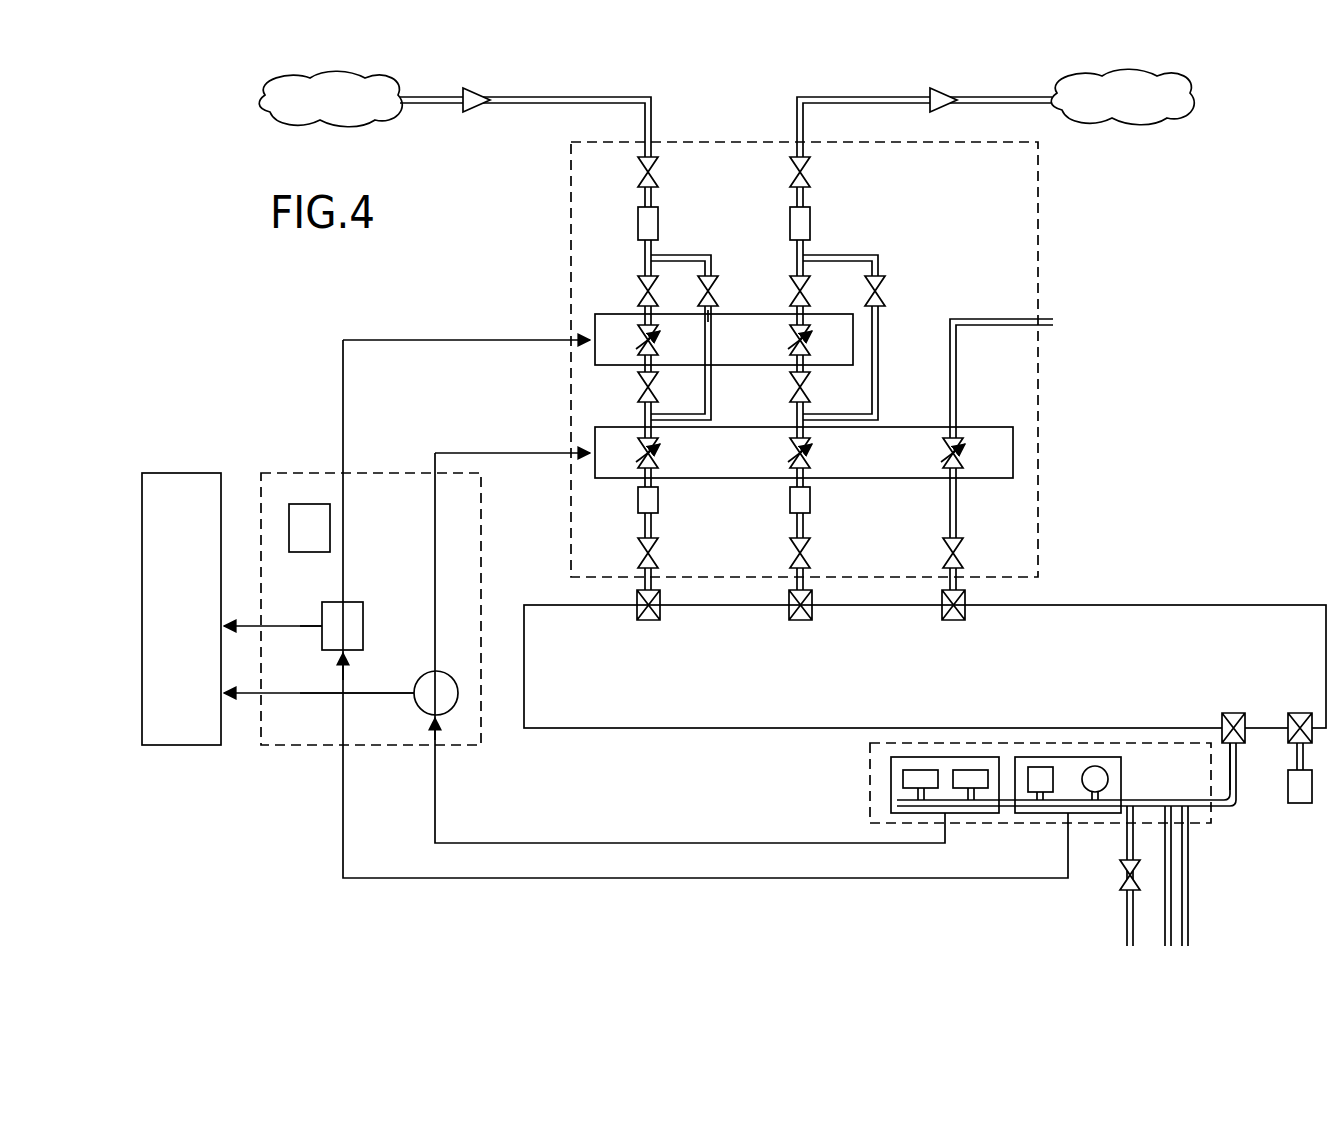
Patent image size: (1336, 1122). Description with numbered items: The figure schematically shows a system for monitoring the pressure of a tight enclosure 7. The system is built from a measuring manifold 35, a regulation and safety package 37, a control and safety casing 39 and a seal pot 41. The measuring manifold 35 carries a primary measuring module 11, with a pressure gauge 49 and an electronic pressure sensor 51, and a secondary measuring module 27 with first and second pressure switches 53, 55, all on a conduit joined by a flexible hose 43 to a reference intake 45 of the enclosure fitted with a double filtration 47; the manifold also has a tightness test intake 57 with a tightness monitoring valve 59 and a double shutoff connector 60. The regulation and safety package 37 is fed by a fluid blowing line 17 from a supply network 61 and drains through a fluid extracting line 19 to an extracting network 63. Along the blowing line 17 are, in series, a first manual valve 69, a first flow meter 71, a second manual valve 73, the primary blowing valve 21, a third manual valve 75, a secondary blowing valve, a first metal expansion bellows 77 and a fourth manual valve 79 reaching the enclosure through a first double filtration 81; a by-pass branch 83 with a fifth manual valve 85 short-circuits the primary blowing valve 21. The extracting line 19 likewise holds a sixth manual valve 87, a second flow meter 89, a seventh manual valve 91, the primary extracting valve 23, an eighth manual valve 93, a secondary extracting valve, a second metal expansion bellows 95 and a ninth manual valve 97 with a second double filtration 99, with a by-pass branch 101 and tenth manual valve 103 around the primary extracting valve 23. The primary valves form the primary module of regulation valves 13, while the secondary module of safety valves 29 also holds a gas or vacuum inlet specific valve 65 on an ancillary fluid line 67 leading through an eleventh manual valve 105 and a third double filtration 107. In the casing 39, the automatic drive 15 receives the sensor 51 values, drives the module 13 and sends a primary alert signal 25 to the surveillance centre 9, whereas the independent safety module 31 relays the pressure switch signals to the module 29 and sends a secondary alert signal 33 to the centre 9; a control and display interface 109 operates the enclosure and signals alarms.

The tight enclosure 7 is at (1105, 604).
The surveillance centre 9 is at (175, 473).
The primary measuring module 11 is at (1070, 757).
The primary module of regulation valves 13 is at (594, 350).
The automatic drive 15 is at (365, 612).
The fluid blowing line 17 is at (528, 97).
The fluid extracting line 19 is at (864, 97).
The primary blowing valve 21 is at (646, 338).
The primary extracting valve 23 is at (798, 338).
The primary alert signal 25 is at (297, 638).
The secondary measuring module 27 is at (955, 757).
The secondary module of safety valves 29 is at (1014, 447).
The safety module 31 is at (447, 715).
The secondary alert signal 33 is at (315, 705).
The measuring manifold 35 is at (655, 472).
The regulation and safety package 37 is at (1042, 236).
The control and safety casing 39 is at (258, 514).
The seal pot 41 is at (1300, 803).
The flexible hose 43 is at (1228, 812).
The reference intake 45 is at (1254, 722).
The double filtration 47 is at (1232, 713).
The pressure gauge 49 is at (1097, 766).
The electronic pressure sensor 51 is at (1042, 767).
The first pressure switch 53 is at (975, 770).
The second pressure switch 55 is at (921, 770).
The tightness test intake 57 is at (1118, 850).
The tightness monitoring valve 59 is at (1126, 893).
The double shutoff connector 60 is at (1194, 858).
The supply network 61 is at (370, 85).
The extracting network 63 is at (1135, 85).
The gas or vacuum inlet specific valve 65 is at (958, 472).
The gas or vacuum inlet ancillary fluid line 67 is at (997, 322).
The first manual valve 69 is at (640, 185).
The first flow meter 71 is at (638, 226).
The second manual valve 73 is at (640, 286).
The third manual valve 75 is at (640, 391).
The first metal expansion bellows 77 is at (640, 502).
The fourth manual valve 79 is at (640, 550).
The first double filtration 81 is at (638, 614).
The fluid by-pass branch 83 is at (702, 262).
The fifth manual valve 85 is at (712, 316).
The sixth manual valve 87 is at (792, 185).
The second flow meter 89 is at (790, 226).
The seventh manual valve 91 is at (792, 286).
The eighth manual valve 93 is at (792, 391).
The second metal expansion bellows 95 is at (792, 502).
The ninth manual valve 97 is at (792, 550).
The second double filtration 99 is at (790, 614).
The fluid by-pass branch 101 is at (856, 262).
The tenth manual valve 103 is at (885, 292).
The eleventh manual valve 105 is at (943, 548).
The third double filtration 107 is at (943, 614).
The control and display interface 109 is at (312, 504).